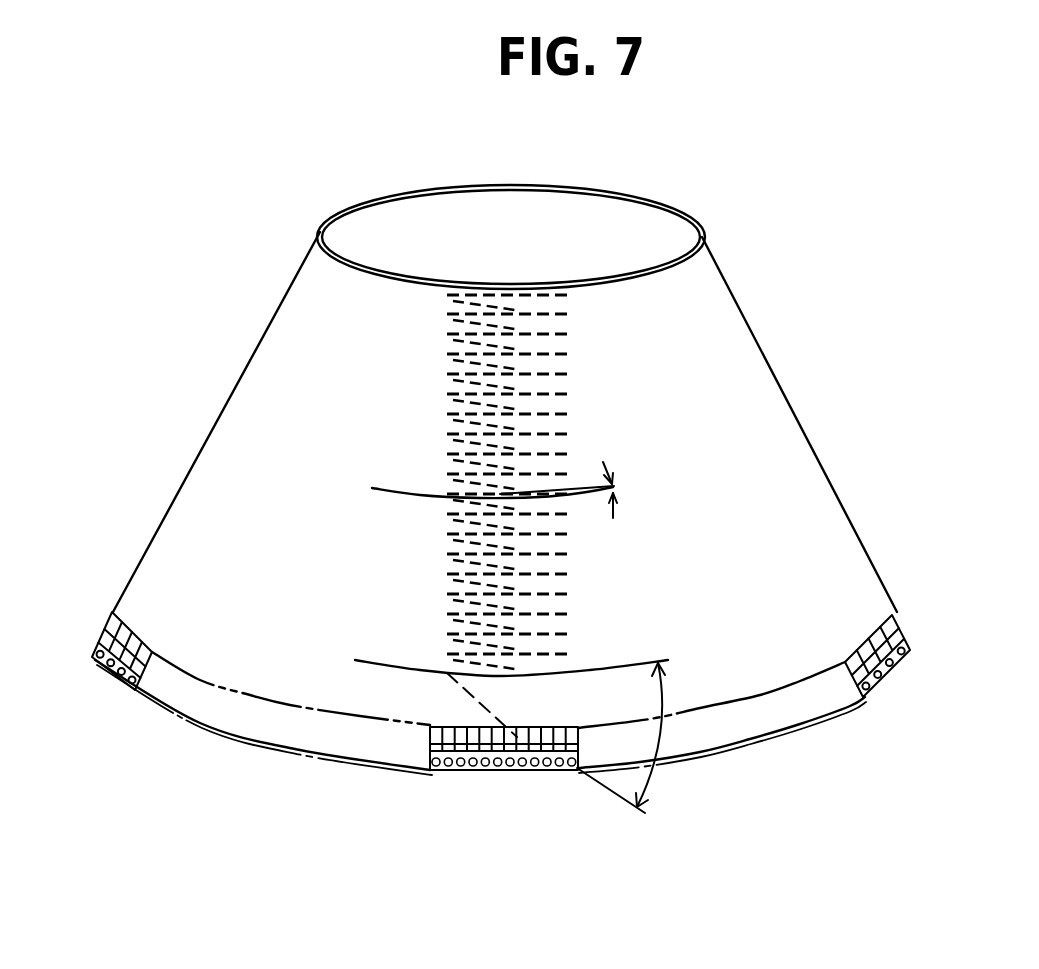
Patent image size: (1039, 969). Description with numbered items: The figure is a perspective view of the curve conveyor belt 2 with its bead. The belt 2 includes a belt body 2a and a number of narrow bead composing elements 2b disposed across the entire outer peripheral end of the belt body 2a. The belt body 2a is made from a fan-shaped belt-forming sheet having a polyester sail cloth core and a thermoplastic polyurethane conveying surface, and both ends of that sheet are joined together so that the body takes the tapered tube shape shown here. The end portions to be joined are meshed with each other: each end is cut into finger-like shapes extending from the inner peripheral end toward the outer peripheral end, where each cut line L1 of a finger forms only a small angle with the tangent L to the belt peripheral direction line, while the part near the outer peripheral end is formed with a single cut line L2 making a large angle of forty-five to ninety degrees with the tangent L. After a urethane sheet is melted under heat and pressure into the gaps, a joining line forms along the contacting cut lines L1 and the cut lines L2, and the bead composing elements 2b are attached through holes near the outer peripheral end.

The curve conveyor belt 2 is at (970, 398).
The belt body 2a is at (783, 467).
The bead composing elements 2b is at (895, 620).
The tangent to the belt peripheral direction line L is at (362, 660).
The cut line of the finger L1 is at (613, 485).
The single cut line L2 is at (608, 793).